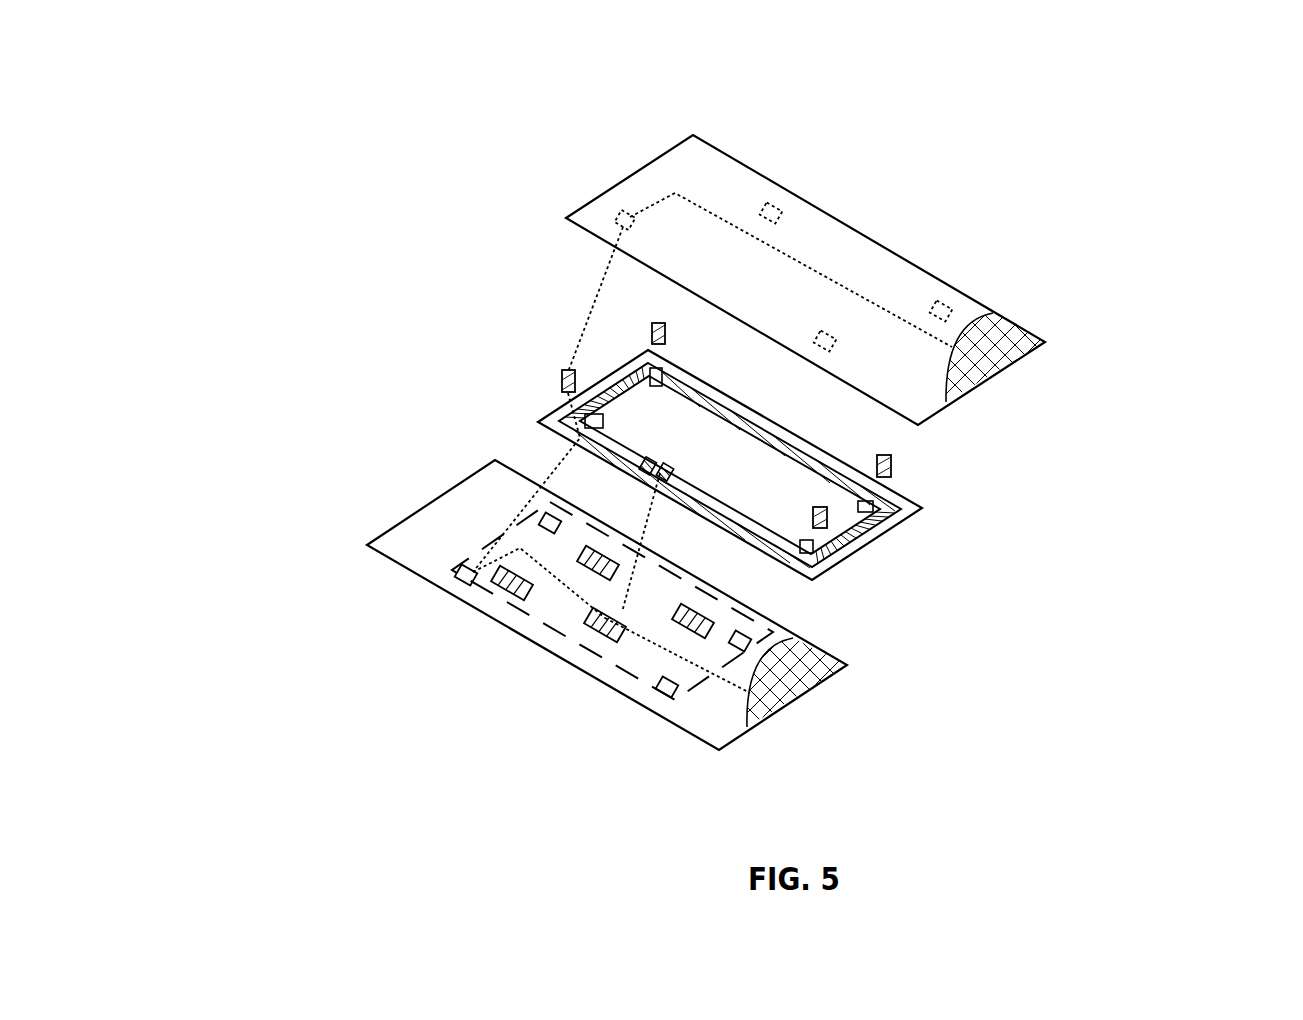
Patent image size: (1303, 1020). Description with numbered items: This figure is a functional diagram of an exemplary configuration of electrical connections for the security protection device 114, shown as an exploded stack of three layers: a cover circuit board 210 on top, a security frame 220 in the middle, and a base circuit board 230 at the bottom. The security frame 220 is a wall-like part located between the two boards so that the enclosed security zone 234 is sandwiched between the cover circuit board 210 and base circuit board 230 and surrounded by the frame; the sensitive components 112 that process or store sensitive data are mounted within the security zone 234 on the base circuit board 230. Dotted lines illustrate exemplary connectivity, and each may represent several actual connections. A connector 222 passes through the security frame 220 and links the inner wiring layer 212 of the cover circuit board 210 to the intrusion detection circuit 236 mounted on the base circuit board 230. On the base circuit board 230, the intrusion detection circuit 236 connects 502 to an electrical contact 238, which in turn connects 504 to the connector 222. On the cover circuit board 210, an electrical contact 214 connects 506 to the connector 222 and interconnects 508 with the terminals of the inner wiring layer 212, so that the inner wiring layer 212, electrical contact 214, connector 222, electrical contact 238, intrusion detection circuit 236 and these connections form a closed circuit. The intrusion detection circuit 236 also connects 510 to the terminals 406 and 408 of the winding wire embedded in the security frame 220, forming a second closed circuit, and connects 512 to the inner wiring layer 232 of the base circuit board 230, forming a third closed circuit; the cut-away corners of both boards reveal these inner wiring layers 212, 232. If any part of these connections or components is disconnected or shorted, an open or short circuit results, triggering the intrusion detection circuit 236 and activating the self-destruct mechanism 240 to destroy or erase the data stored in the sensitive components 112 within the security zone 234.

The security protection device 114 is at (792, 98).
The cover circuit board 210 is at (872, 235).
The inner wiring layer 212 is at (1047, 342).
The electrical contact 214 is at (560, 218).
The connection 508 is at (791, 265).
The connection 506 is at (590, 299).
The connector 222 is at (562, 378).
The security frame 220 is at (921, 503).
The terminal 406 is at (745, 385).
The terminal 408 is at (673, 463).
The connection 504 is at (526, 482).
The connection 510 is at (634, 542).
The base circuit board 230 is at (770, 618).
The inner wiring layer 232 is at (820, 690).
The security zone 234 is at (650, 660).
The electrical contact 238 is at (455, 570).
The sensitive components 112 is at (598, 570).
The connection 502 is at (539, 577).
The connection 512 is at (677, 655).
The intrusion detection circuit 236 is at (620, 638).
The self-destruct mechanism 240 is at (680, 693).